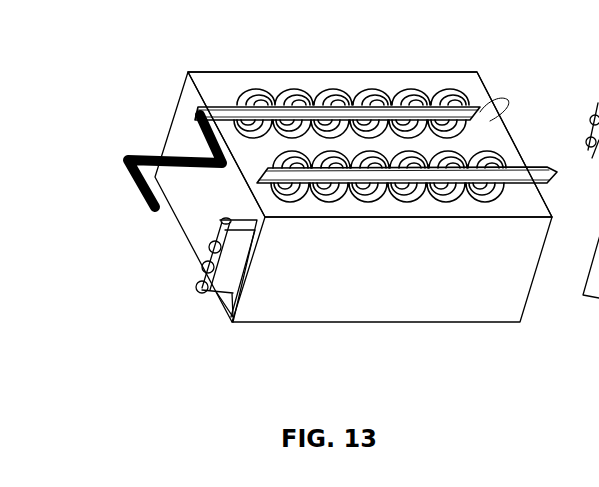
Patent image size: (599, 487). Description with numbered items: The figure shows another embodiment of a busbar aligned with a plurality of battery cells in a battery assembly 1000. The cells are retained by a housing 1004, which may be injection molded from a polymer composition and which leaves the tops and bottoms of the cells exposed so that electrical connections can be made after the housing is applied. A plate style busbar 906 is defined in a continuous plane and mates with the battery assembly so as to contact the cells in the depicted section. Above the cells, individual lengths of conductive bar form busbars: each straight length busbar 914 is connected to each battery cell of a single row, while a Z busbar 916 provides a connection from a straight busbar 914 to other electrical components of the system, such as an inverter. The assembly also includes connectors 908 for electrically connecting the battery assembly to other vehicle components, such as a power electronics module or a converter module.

The battery module assembly 1000 is at (533, 72).
The housing 1004 is at (394, 72).
The busbar 906 is at (448, 322).
The connector 908 is at (202, 290).
The straight length busbar 914 is at (488, 114).
The Z busbar 916 is at (138, 183).